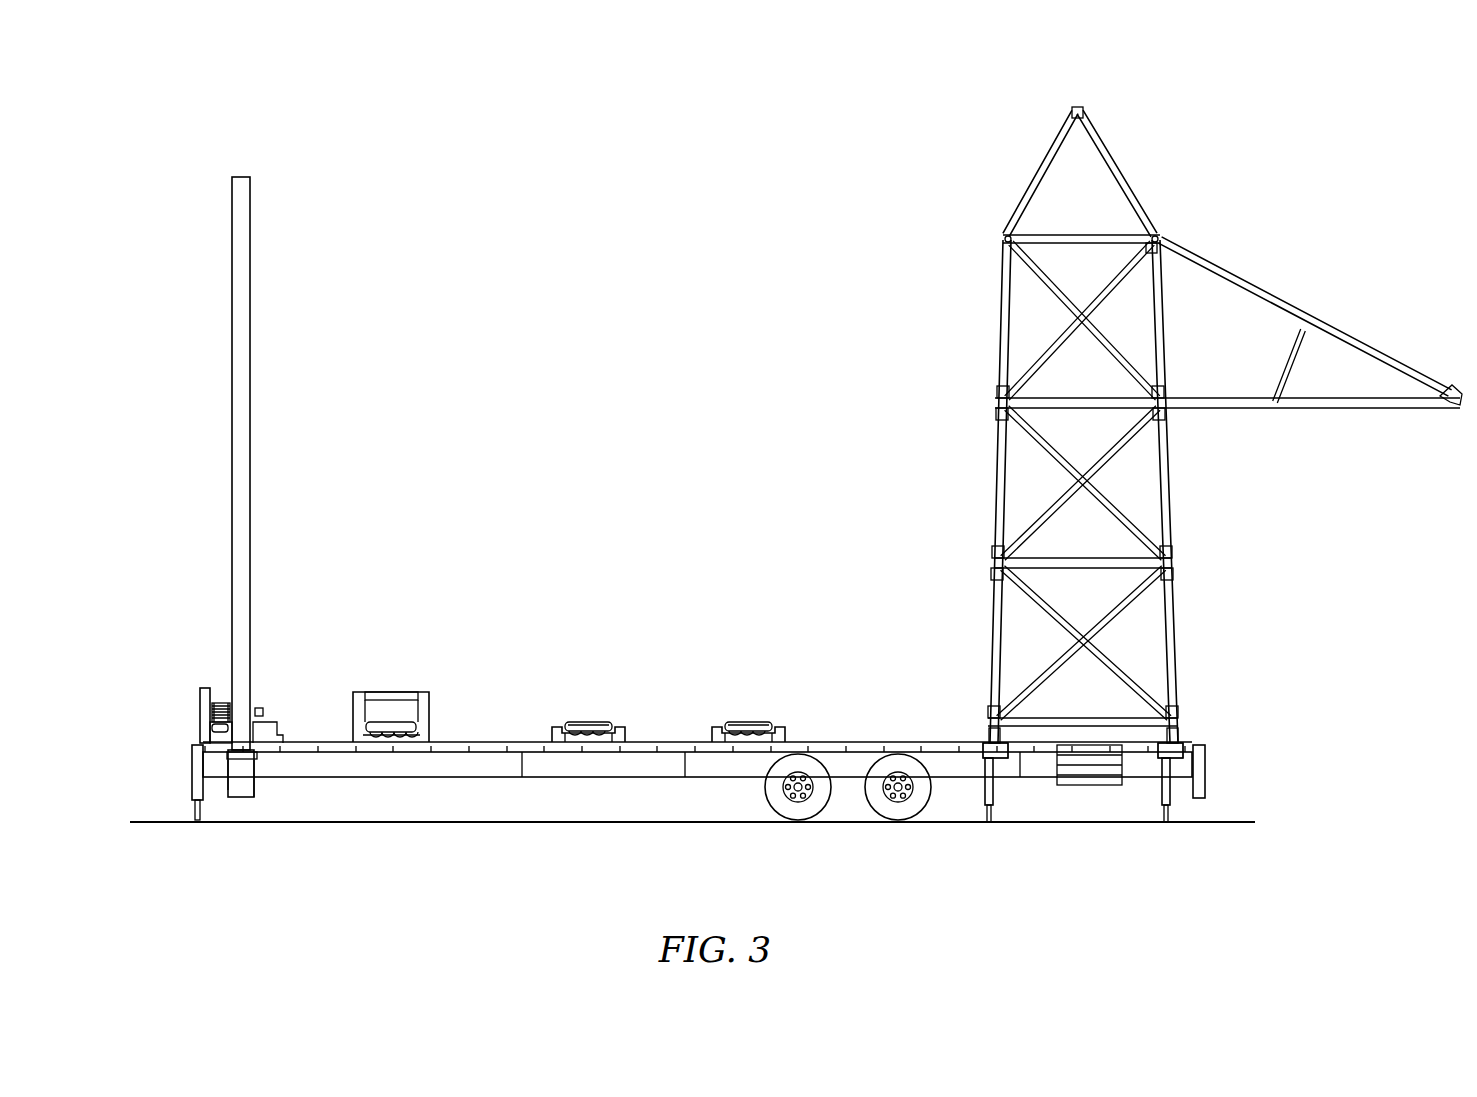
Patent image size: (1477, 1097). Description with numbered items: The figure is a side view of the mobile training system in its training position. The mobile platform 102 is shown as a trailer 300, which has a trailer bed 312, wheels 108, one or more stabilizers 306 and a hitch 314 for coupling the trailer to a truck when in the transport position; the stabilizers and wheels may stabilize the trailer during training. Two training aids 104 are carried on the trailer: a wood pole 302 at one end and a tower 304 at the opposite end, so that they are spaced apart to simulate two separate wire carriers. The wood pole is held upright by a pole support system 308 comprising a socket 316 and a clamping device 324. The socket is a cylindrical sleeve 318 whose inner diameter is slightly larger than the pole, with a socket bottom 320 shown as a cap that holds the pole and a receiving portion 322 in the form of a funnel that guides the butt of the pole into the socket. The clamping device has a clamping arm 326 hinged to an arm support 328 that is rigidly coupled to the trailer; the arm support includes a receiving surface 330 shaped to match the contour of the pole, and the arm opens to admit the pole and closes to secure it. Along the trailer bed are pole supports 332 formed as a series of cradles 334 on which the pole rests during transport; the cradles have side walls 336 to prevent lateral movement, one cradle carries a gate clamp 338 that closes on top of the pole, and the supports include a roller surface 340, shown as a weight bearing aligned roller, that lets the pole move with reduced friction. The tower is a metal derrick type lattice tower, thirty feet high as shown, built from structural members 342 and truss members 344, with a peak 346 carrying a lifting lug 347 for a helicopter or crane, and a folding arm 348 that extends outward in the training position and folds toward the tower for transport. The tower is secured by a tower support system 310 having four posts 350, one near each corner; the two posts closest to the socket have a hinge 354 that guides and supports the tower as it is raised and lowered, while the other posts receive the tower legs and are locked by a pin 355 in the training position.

The mobile platform 102 is at (430, 790).
The training aids 104 is at (258, 468).
The wheels 108 is at (790, 815).
The trailer 300 is at (468, 740).
The wood pole 302 is at (252, 247).
The tower 304 is at (997, 272).
The stabilizers 306 is at (190, 775).
The pole support system 308 is at (200, 725).
The tower support system 310 is at (1182, 745).
The trailer bed 312 is at (878, 740).
The hitch 314 is at (1200, 778).
The socket 316 is at (262, 790).
The cylindrical sleeve 318 is at (228, 790).
The socket bottom 320 is at (242, 800).
The receiving portion 322 is at (262, 755).
The clamping device 324 is at (200, 693).
The clamping arm 326 is at (215, 705).
The arm support 328 is at (258, 710).
The receiving surface 330 is at (222, 700).
The pole supports 332 is at (400, 690).
The cradles 334 is at (220, 735).
The side walls 336 is at (352, 733).
The clamp 338 is at (368, 692).
The roller surface 340 is at (590, 722).
The structural members 342 is at (1000, 330).
The truss members 344 is at (1045, 272).
The peak 346 is at (1030, 178).
The lifting lug 347 is at (1075, 107).
The folding arm 348 is at (1342, 328).
The posts 350 is at (988, 745).
The hinge 354 is at (990, 740).
The pin 355 is at (1180, 728).